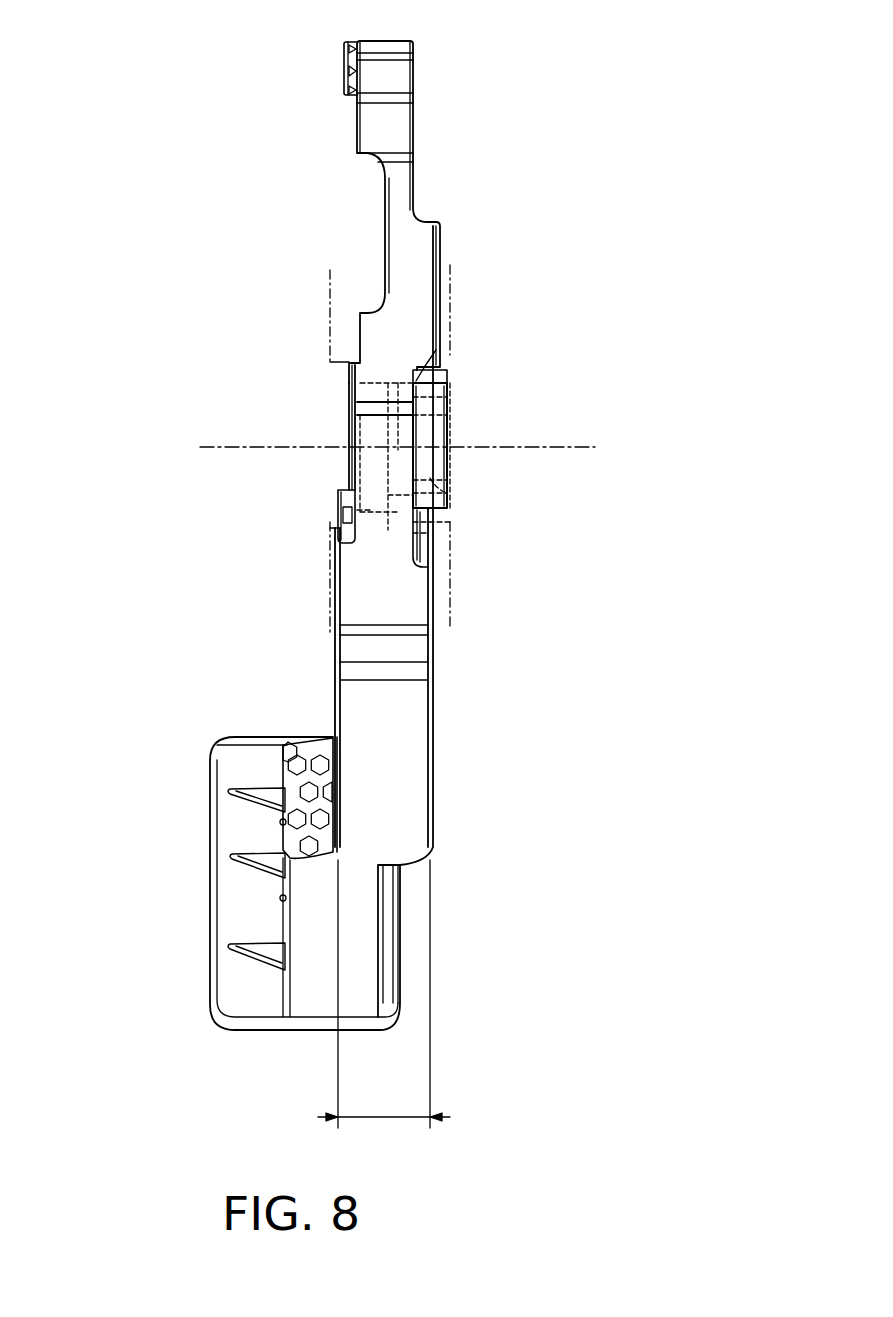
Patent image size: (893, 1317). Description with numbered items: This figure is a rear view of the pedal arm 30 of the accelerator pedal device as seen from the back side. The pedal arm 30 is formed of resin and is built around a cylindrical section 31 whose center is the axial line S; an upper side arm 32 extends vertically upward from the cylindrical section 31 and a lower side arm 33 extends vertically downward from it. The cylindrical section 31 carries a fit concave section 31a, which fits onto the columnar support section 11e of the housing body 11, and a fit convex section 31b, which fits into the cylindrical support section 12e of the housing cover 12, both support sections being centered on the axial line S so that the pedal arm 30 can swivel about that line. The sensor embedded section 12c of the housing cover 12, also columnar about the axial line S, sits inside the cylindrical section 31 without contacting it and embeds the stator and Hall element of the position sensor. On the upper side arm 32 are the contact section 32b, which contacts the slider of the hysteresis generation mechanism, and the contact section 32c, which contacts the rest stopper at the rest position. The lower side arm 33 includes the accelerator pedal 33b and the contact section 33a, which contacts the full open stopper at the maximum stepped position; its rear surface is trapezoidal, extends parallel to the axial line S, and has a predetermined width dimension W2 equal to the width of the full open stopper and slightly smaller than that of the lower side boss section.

The pedal arm 30 is at (474, 152).
The upper side arm 32 is at (427, 258).
The contact section 32b is at (345, 54).
The contact section 32c is at (378, 121).
The support section 11e is at (367, 357).
The support section 12e is at (450, 345).
The axial line S is at (247, 447).
The cylindrical section 31 is at (352, 477).
The fit concave section 31a is at (350, 391).
The fit convex section 31b is at (420, 382).
The sensor embedded section 12c is at (447, 495).
The housing body 11 is at (330, 585).
The housing cover 12 is at (450, 585).
The lower side arm 33 is at (417, 758).
The contact section 33a is at (420, 652).
The accelerator pedal 33b is at (210, 742).
The width dimension W2 is at (384, 994).